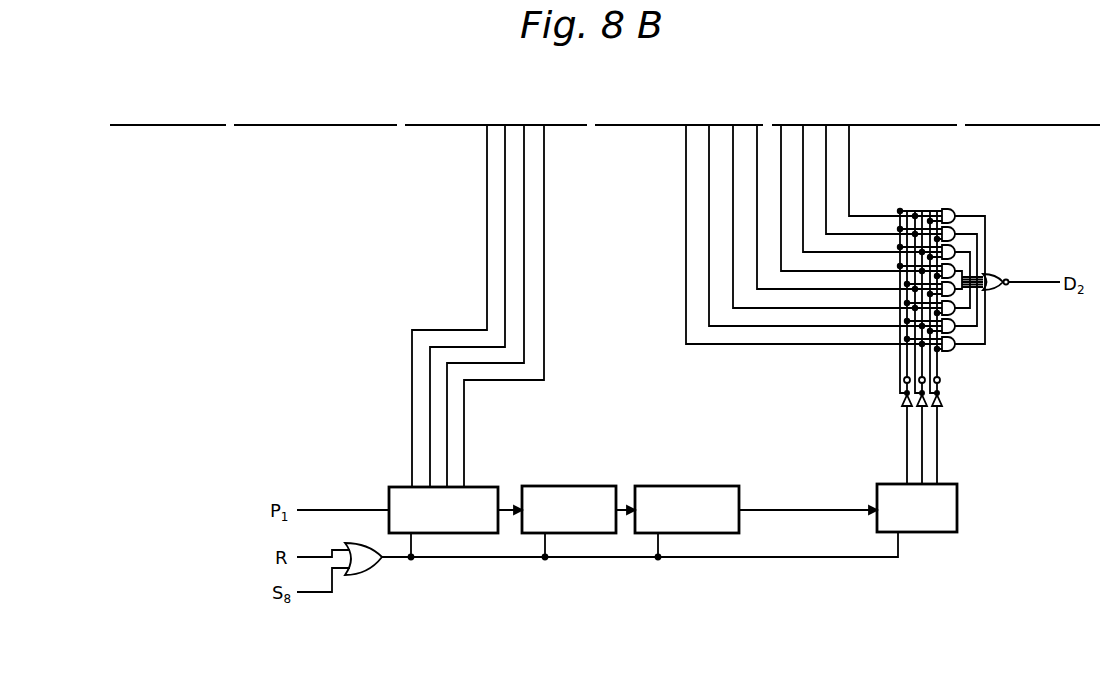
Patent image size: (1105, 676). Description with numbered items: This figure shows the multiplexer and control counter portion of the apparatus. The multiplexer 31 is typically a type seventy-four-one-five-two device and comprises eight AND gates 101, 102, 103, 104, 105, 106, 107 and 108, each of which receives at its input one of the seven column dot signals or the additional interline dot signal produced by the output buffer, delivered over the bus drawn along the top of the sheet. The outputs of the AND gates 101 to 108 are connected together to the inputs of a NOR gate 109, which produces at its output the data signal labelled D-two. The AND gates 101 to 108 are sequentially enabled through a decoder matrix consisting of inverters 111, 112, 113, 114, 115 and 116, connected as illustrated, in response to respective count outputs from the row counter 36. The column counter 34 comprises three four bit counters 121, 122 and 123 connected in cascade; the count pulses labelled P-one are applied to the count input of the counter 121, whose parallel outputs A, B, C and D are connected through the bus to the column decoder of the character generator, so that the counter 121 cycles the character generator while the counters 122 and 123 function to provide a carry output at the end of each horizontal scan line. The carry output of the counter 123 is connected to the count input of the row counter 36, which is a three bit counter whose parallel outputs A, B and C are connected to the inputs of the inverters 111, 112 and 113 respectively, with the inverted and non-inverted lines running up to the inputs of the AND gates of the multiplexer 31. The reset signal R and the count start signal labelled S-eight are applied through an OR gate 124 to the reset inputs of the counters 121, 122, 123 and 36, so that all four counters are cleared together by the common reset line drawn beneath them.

The multiplexer 31 is at (1060, 350).
The column counter 34 is at (663, 470).
The row counter 36 is at (960, 487).
The AND gate 101 is at (941, 210).
The AND gate 102 is at (955, 228).
The AND gate 103 is at (957, 250).
The AND gate 104 is at (958, 268).
The AND gate 105 is at (958, 292).
The AND gate 106 is at (958, 310).
The AND gate 107 is at (958, 328).
The AND gate 108 is at (958, 347).
The NOR gate 109 is at (994, 276).
The inverter 111 is at (902, 402).
The inverter 112 is at (918, 404).
The inverter 113 is at (934, 407).
The inverter 114 is at (903, 379).
The inverter 115 is at (940, 379).
The inverter 116 is at (942, 400).
The four bit counter 121 is at (489, 486).
The four bit counter 122 is at (607, 467).
The four bit counter 123 is at (720, 485).
The OR gate 124 is at (368, 572).